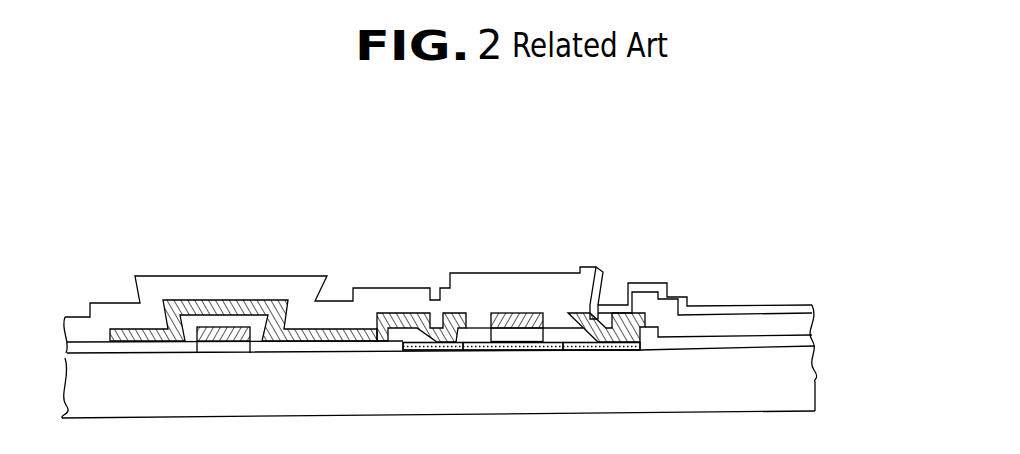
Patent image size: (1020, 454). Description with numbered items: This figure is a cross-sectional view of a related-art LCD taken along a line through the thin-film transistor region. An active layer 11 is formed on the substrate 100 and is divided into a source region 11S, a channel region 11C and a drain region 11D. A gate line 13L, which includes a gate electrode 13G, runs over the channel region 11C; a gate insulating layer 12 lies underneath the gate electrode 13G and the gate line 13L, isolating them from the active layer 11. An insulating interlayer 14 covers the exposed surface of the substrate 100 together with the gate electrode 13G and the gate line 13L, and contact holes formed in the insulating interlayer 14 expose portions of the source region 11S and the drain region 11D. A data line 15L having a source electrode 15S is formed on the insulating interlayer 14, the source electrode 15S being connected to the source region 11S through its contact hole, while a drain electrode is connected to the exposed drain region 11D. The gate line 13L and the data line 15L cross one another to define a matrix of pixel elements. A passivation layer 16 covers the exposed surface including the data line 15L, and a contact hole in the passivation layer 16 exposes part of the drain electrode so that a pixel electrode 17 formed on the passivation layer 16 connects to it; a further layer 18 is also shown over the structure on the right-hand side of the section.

The substrate 100 is at (815, 379).
The active layer 11 is at (633, 355).
The source region 11S is at (438, 349).
The channel region 11C is at (512, 345).
The drain region 11D is at (587, 350).
The gate insulating layer 12 is at (227, 353).
The gate electrode 13G is at (497, 315).
The gate line 13L is at (242, 342).
The insulating interlayer 14 is at (370, 345).
The source electrode 15S is at (402, 315).
The data line 15L is at (196, 301).
The passivation layer 16 is at (293, 278).
The pixel electrode 17 is at (604, 270).
The pixel electrode 18 is at (812, 312).